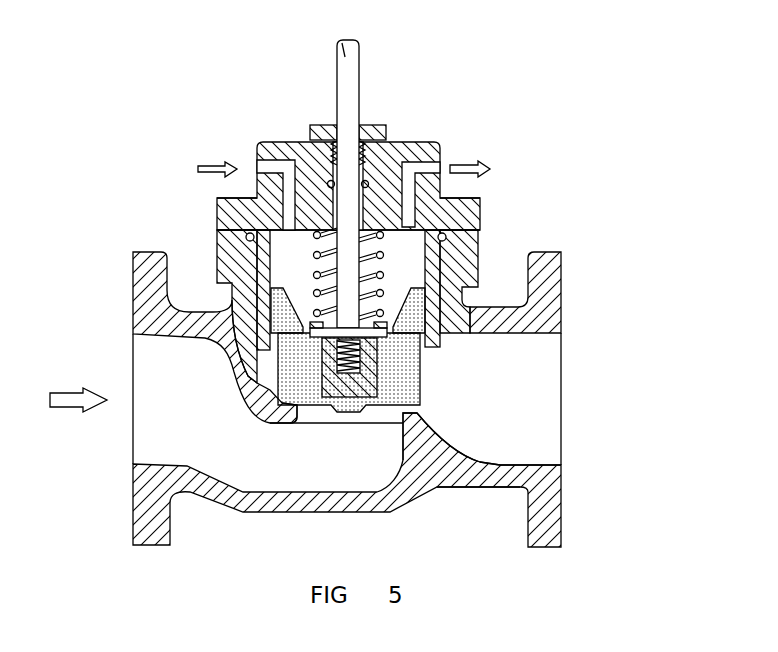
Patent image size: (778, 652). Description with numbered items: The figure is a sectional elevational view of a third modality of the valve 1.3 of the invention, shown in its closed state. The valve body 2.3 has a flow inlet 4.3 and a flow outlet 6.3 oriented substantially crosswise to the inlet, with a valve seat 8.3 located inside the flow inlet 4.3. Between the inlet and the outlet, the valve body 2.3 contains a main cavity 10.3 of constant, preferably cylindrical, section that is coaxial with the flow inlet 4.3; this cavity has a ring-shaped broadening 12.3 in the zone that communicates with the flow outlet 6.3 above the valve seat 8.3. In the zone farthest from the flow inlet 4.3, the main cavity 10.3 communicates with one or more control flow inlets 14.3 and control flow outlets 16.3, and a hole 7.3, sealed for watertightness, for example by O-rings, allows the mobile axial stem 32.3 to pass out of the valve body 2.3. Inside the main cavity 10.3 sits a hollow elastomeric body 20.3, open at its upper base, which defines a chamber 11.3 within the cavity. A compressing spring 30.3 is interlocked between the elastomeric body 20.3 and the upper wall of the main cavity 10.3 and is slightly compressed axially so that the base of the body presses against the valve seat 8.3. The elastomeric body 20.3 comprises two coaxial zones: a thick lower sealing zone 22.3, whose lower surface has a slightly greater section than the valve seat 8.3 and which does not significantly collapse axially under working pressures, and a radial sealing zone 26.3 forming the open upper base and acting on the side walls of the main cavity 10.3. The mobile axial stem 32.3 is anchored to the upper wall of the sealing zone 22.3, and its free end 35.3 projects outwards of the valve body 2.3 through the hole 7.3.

The valve 1.3 is at (485, 215).
The valve body 2.3 is at (205, 248).
The flow inlet 4.3 is at (305, 473).
The flow outlet 6.3 is at (443, 427).
The hole 7.3 is at (362, 125).
The valve seat 8.3 is at (377, 410).
The main cavity 10.3 is at (420, 363).
The chamber 11.3 is at (295, 267).
The ring-shaped broadening 12.3 is at (272, 385).
The control flow inlet 14.3 is at (256, 165).
The control flow outlet 16.3 is at (433, 167).
The elastomeric body 20.3 is at (390, 363).
The sealing zone 22.3 is at (380, 385).
The radial sealing zone 26.3 is at (253, 197).
The compressing spring 30.3 is at (383, 262).
The mobile axial stem 32.3 is at (347, 110).
The free end 35.3 is at (337, 40).